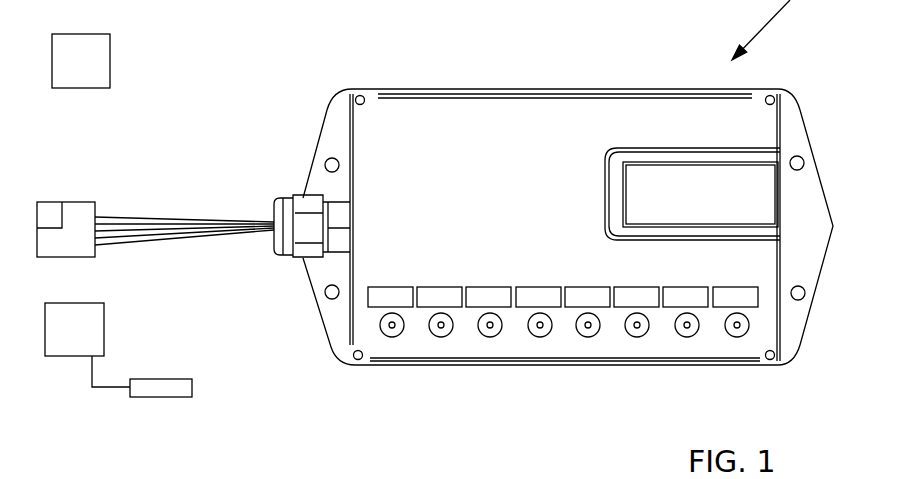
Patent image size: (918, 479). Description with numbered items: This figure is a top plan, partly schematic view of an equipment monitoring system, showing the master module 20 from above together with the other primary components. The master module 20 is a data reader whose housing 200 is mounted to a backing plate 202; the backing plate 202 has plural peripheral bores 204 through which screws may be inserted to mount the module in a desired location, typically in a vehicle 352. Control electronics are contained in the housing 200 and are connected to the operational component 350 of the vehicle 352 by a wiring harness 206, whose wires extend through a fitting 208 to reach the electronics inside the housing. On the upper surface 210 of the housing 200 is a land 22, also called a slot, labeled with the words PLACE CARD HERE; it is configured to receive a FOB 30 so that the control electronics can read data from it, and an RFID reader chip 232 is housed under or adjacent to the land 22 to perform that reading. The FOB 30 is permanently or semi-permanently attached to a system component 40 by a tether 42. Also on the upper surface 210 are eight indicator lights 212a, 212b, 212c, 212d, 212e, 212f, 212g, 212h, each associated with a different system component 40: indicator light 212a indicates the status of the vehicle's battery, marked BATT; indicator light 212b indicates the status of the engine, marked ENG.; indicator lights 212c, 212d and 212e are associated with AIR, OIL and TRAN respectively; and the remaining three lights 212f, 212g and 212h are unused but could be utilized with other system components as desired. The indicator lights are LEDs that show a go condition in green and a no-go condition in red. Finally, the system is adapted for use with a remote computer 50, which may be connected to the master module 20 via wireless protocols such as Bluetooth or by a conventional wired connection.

The master module 20 is at (806, 187).
The land 22 is at (653, 173).
The FOB 30 is at (187, 390).
The system component 40 is at (95, 323).
The tether 42 is at (90, 377).
The remote computer 50 is at (100, 60).
The housing 200 is at (467, 118).
The backing plate 202 is at (800, 115).
The peripheral bores 204 is at (330, 158).
The wiring harness 206 is at (165, 226).
The fitting 208 is at (290, 241).
The upper surface 210 is at (450, 188).
The indicator light 212a is at (392, 330).
The indicator light 212b is at (440, 330).
The indicator light 212c is at (490, 330).
The indicator light 212d is at (540, 330).
The indicator light 212e is at (588, 330).
The indicator light 212f is at (637, 330).
The indicator light 212g is at (687, 330).
The indicator light 212h is at (737, 330).
The RFID reader chip 232 is at (633, 200).
The operational component 350 is at (52, 213).
The vehicle 352 is at (84, 210).